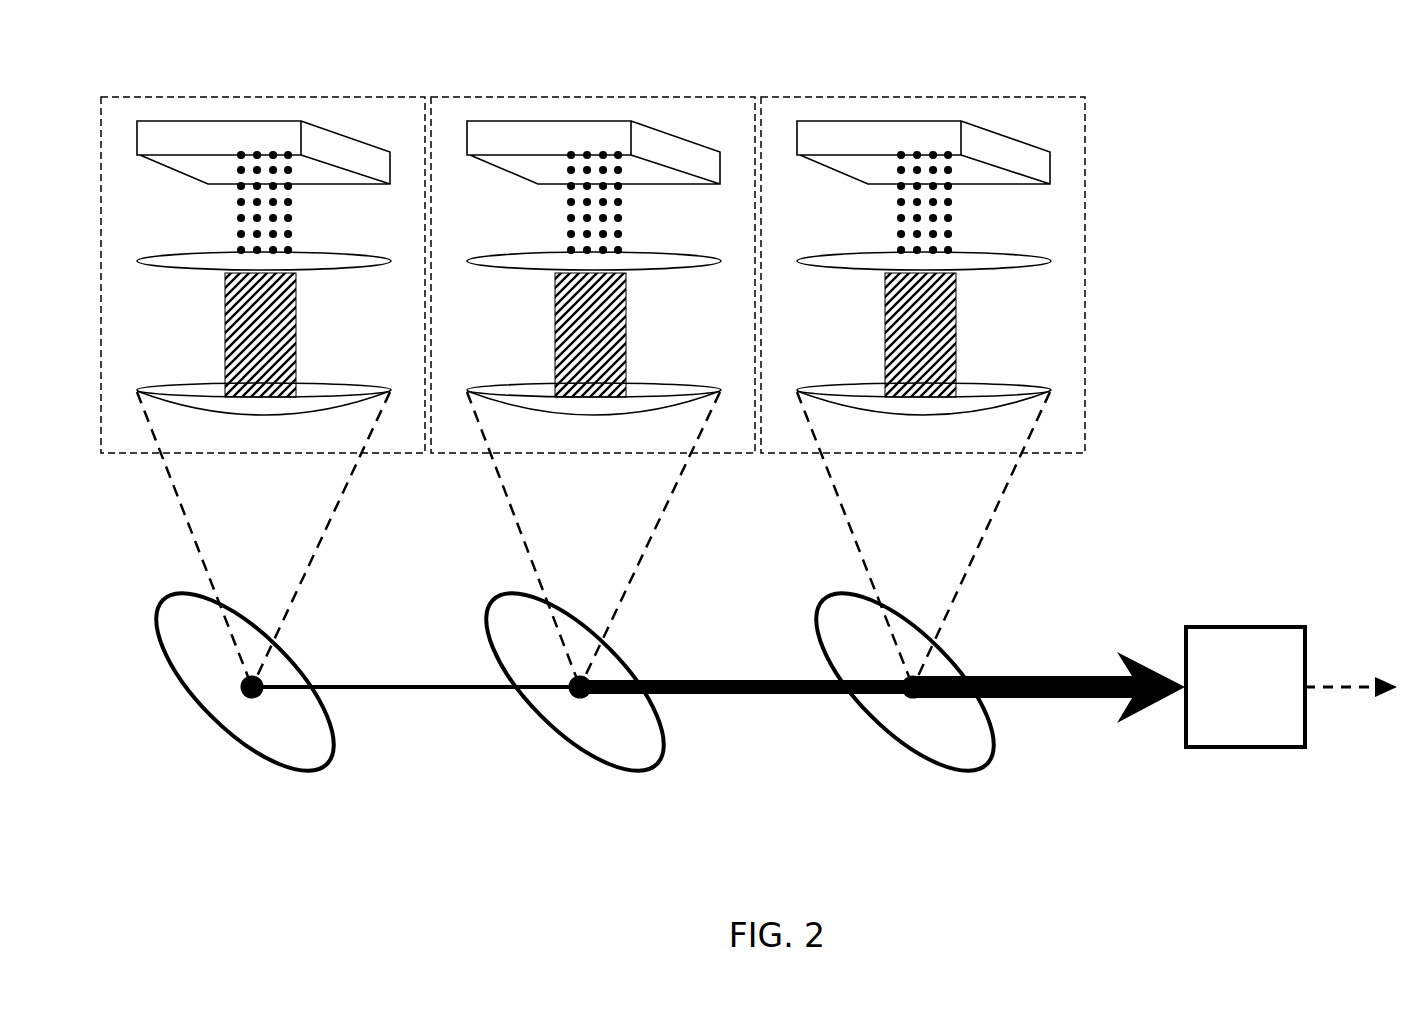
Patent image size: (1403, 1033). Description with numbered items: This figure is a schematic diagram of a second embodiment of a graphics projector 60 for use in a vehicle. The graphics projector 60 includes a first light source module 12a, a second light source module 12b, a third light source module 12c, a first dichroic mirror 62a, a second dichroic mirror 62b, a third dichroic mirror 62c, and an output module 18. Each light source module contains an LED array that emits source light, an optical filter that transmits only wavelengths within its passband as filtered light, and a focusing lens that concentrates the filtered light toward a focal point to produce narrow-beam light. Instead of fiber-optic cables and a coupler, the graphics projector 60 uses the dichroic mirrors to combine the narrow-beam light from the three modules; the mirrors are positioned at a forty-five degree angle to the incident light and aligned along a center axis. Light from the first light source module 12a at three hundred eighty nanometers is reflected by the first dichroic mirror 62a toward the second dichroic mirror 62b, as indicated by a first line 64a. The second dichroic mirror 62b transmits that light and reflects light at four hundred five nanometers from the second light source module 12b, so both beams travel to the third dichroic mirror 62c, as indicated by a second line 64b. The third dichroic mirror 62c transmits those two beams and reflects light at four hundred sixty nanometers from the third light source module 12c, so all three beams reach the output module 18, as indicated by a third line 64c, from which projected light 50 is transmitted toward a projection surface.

The first light source module 12a is at (263, 250).
The second light source module 12b is at (593, 250).
The third light source module 12c is at (923, 250).
The first dichroic mirror 62a is at (168, 616).
The second dichroic mirror 62b is at (498, 614).
The third dichroic mirror 62c is at (830, 616).
The first line 64a is at (413, 690).
The second line 64b is at (758, 696).
The third line 64c is at (1076, 700).
The output module 18 is at (1231, 698).
The projected light 50 is at (1372, 690).
The graphics projector 60 is at (1182, 88).